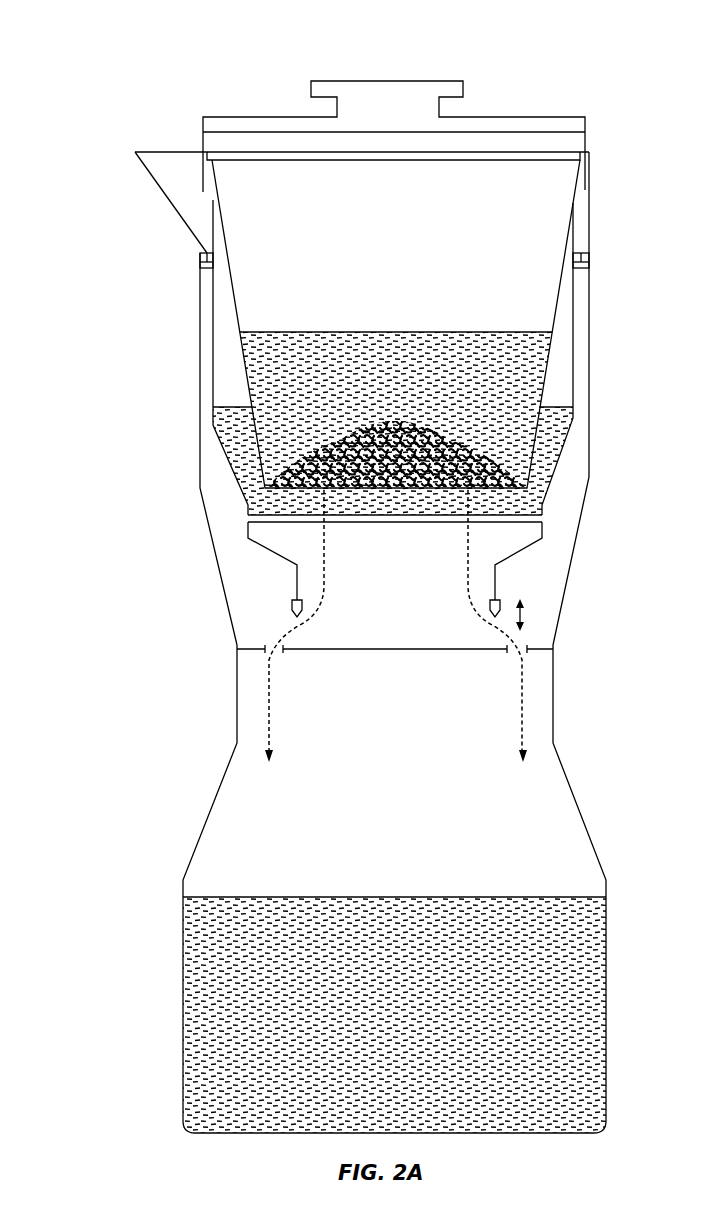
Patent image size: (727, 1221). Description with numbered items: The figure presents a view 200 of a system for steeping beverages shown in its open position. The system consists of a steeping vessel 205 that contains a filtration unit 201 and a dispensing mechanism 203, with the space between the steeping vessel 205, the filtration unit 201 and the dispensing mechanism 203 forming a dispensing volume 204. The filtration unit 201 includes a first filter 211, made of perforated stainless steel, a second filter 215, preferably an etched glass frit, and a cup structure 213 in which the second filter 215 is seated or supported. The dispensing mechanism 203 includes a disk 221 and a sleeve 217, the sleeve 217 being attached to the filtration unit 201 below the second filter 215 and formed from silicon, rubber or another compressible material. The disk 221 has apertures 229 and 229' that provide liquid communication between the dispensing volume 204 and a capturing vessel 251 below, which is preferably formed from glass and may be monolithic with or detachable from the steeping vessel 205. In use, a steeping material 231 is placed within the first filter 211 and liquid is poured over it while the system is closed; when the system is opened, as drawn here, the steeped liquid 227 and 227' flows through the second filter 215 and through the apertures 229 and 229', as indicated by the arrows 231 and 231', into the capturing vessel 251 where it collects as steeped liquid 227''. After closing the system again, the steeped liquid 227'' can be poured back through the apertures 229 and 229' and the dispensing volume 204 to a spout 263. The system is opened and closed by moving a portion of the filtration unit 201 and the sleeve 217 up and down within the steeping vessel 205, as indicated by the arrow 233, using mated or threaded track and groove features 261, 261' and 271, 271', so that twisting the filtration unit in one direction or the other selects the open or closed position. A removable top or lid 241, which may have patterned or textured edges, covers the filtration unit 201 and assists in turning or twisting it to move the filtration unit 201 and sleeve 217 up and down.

The view 200 is at (100, 49).
The removable top or lid 241 is at (578, 123).
The spout 263 is at (168, 162).
The threaded track and groove feature 261 is at (180, 251).
The threaded track and groove feature 261' is at (171, 274).
The threaded track and groove feature 271 is at (610, 251).
The threaded track and groove feature 271' is at (616, 274).
The dispensing volume 204 is at (222, 535).
The steeping vessel 205 is at (596, 372).
The first filter 211 is at (548, 437).
The filtration unit 201 is at (580, 448).
The steeped liquid 227 is at (396, 410).
The steeped liquid 227' is at (360, 461).
The steeped liquid 227'' is at (394, 1015).
The steeping material 231 is at (397, 591).
The arrow 231' is at (303, 626).
The cup structure 213 is at (556, 478).
The second filter 215 is at (400, 523).
The dispensing mechanism 203 is at (528, 565).
The sleeve 217 is at (297, 578).
The arrow 233 is at (547, 603).
The disk 221 is at (400, 652).
The aperture 229 is at (487, 665).
The aperture 229' is at (307, 665).
The capturing vessel 251 is at (586, 809).